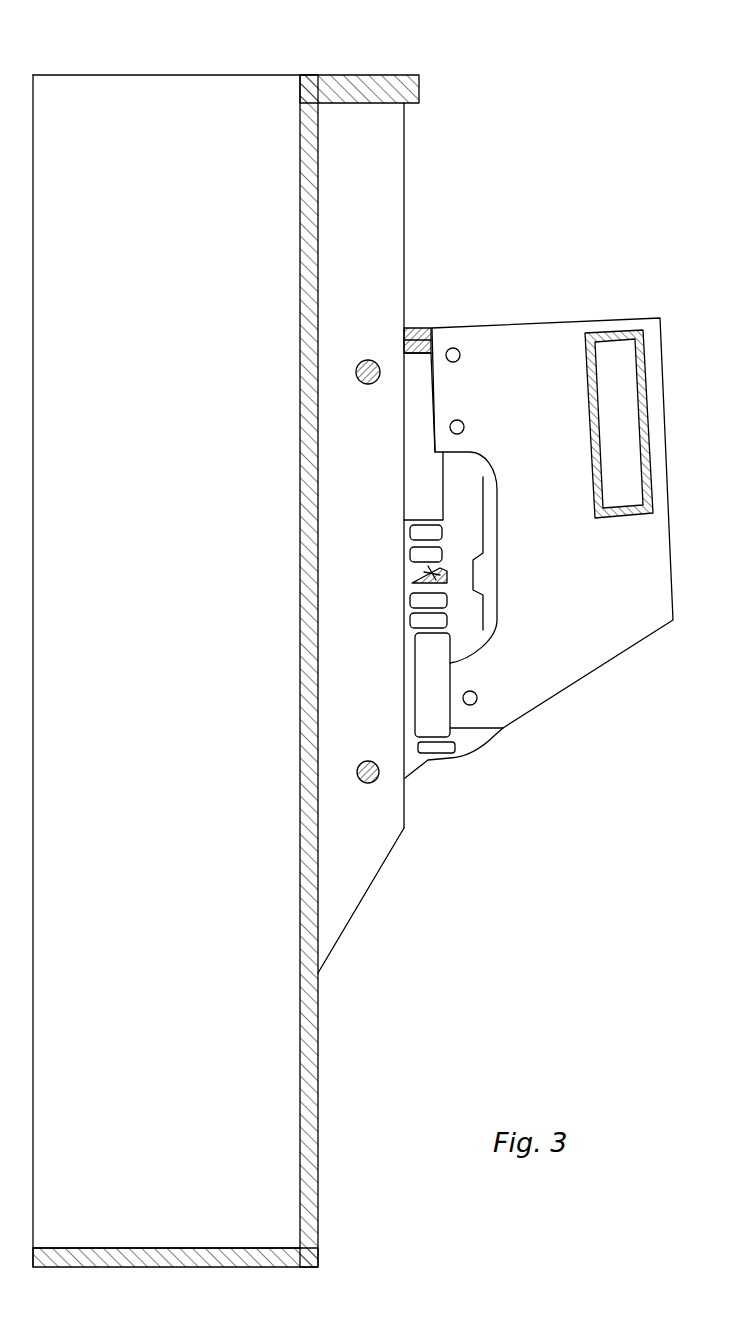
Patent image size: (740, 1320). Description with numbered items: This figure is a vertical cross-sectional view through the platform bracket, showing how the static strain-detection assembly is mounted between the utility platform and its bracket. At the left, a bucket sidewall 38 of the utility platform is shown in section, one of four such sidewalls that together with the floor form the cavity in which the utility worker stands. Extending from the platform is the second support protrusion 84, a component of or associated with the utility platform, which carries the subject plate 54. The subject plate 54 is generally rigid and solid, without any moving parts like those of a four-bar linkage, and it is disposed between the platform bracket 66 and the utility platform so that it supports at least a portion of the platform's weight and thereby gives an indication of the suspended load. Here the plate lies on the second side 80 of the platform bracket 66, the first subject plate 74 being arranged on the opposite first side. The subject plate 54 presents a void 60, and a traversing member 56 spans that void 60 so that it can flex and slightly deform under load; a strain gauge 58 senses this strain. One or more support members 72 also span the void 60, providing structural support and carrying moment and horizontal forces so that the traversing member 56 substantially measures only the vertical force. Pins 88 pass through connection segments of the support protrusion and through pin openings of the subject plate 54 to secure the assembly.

The bucket sidewall 38 is at (125, 113).
The second support protrusion 84 is at (365, 162).
The platform bracket 66 is at (538, 355).
The support member 72 is at (417, 332).
The void 60 is at (398, 550).
The strain gauge 58 is at (417, 575).
The traversing member 56 is at (423, 580).
The pin 88 is at (368, 358).
The second side 80 is at (350, 398).
The subject plate 54 is at (492, 735).
The first subject plate 74 is at (486, 782).